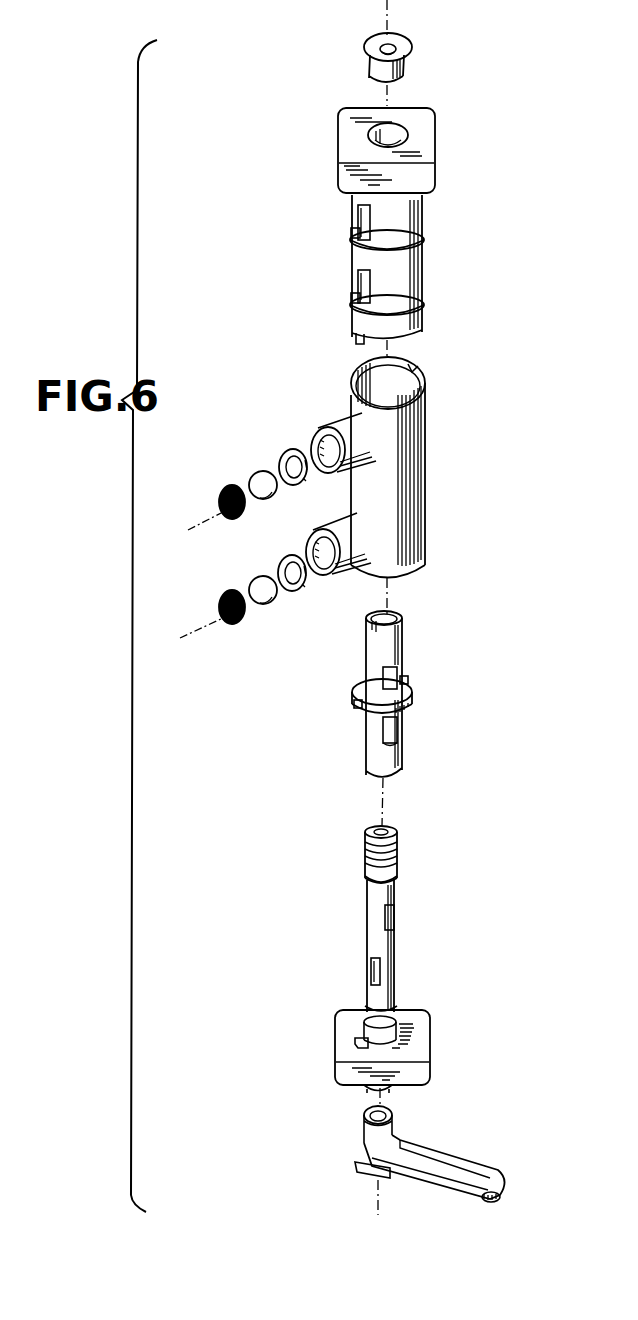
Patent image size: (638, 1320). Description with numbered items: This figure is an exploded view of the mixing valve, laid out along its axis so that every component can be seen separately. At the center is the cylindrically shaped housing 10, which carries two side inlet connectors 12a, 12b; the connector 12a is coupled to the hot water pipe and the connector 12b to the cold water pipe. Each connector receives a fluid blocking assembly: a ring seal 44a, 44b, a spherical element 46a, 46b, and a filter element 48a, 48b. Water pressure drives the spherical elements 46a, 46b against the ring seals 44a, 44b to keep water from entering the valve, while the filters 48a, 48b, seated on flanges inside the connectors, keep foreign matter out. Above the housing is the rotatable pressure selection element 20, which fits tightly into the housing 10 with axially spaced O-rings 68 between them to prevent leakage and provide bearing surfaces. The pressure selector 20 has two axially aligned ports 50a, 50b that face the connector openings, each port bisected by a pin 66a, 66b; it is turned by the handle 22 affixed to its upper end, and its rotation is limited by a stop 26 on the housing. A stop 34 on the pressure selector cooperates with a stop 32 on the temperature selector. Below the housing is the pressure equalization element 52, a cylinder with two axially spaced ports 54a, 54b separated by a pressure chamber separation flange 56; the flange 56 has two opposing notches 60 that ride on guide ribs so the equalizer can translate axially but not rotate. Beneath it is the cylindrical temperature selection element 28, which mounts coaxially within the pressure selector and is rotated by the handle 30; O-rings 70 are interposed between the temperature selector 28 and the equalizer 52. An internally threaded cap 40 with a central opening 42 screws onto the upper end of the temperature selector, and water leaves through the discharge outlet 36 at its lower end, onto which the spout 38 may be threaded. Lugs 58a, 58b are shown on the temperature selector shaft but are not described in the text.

The housing 10 is at (410, 475).
The inlet connector 12a is at (342, 427).
The inlet connector 12b is at (342, 532).
The pressure selection element 20 is at (400, 222).
The handle 22 is at (425, 145).
The stop 26 is at (360, 400).
The temperature selection element 28 is at (349, 918).
The handle 30 is at (420, 1028).
The stop 32 is at (355, 1043).
The stop 34 is at (355, 338).
The discharge outlet 36 is at (392, 1090).
The spout 38 is at (455, 1162).
The cap 40 is at (372, 68).
The opening 42 is at (394, 47).
The ring seal 44a is at (290, 455).
The ring seal 44b is at (295, 592).
The spherical element 46a is at (258, 477).
The spherical element 46b is at (262, 582).
The filter element 48a is at (225, 500).
The filter element 48b is at (230, 622).
The port 50a is at (352, 232).
The port 50b is at (352, 297).
The pressure equalization element 52 is at (401, 641).
The port 54a is at (381, 674).
The port 54b is at (397, 731).
The pressure chamber separation flange 56 is at (410, 694).
The first lug 58a is at (395, 918).
The second lug 58b is at (383, 972).
The notch 60 is at (404, 680).
The pin 66a is at (358, 215).
The pin 66b is at (358, 280).
The O-ring 68 is at (397, 307).
The O-ring 70 is at (366, 880).